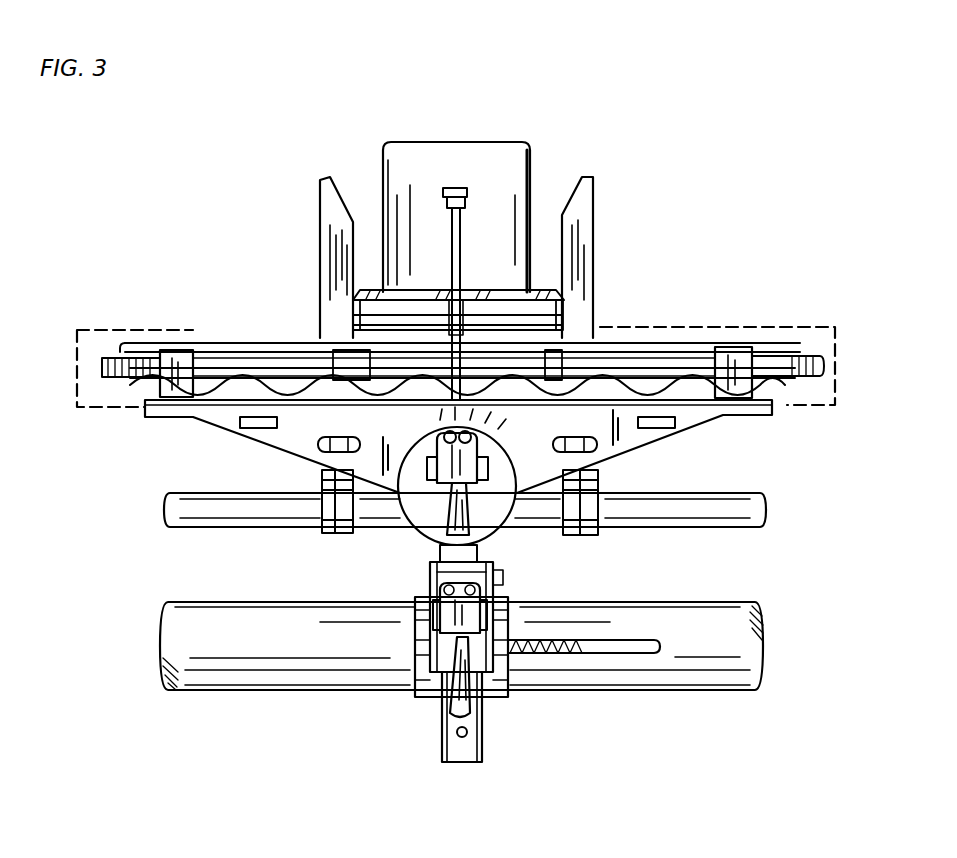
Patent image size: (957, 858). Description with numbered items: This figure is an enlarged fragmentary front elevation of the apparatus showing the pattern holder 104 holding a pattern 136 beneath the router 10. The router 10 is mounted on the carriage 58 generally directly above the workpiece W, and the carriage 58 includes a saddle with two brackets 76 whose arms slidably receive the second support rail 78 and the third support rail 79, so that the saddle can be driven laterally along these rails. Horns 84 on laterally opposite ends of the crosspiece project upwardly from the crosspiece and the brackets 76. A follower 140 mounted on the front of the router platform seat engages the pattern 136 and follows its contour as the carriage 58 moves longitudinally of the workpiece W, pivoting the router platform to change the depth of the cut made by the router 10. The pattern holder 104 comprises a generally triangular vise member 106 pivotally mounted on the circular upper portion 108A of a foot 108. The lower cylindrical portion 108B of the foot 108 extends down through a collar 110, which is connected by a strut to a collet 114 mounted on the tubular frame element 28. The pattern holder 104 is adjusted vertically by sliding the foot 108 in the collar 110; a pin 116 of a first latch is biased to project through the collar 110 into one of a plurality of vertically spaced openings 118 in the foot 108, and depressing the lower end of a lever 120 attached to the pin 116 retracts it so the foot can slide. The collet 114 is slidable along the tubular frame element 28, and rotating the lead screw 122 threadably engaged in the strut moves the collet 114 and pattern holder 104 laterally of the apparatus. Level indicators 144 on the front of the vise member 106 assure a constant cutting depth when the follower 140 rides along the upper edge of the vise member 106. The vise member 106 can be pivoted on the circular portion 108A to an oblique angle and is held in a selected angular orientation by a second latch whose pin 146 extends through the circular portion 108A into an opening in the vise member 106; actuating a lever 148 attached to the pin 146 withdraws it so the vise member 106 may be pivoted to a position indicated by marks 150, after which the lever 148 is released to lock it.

The router 10 is at (413, 141).
The follower 140 is at (459, 215).
The horns 84 is at (330, 212).
The carriage 58 is at (312, 300).
The third support rail 79 is at (645, 345).
The pattern 136 is at (145, 402).
The vise member 106 is at (227, 439).
The level indicators 144 is at (340, 437).
The marks 150 is at (432, 434).
The pin 146 is at (466, 446).
The lever 148 is at (440, 527).
The circular upper portion 108A is at (500, 505).
The second support rail 78 is at (215, 527).
The brackets 76 is at (322, 478).
The foot 108 is at (430, 562).
The collar 110 is at (437, 572).
The pattern holder 104 is at (503, 577).
The pin 116 is at (445, 596).
The tubular frame element 28 is at (258, 678).
The collet 114 is at (425, 697).
The lead screw 122 is at (651, 657).
The lower cylindrical portion 108B is at (482, 725).
The lever 120 is at (450, 710).
The openings 118 is at (467, 736).
The workpiece W is at (85, 330).